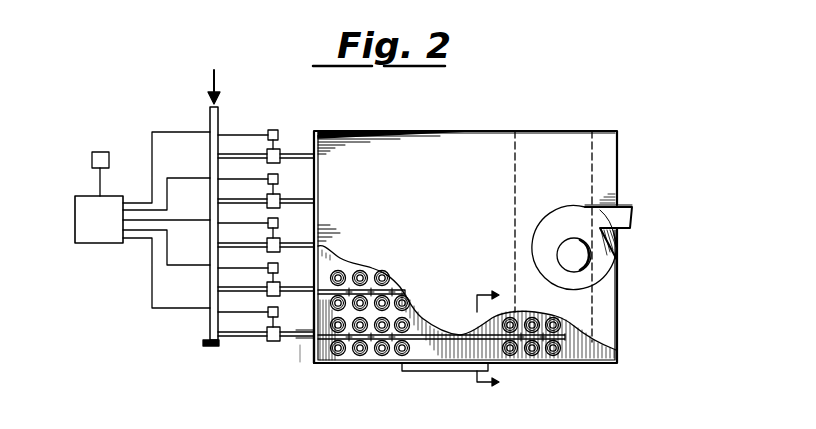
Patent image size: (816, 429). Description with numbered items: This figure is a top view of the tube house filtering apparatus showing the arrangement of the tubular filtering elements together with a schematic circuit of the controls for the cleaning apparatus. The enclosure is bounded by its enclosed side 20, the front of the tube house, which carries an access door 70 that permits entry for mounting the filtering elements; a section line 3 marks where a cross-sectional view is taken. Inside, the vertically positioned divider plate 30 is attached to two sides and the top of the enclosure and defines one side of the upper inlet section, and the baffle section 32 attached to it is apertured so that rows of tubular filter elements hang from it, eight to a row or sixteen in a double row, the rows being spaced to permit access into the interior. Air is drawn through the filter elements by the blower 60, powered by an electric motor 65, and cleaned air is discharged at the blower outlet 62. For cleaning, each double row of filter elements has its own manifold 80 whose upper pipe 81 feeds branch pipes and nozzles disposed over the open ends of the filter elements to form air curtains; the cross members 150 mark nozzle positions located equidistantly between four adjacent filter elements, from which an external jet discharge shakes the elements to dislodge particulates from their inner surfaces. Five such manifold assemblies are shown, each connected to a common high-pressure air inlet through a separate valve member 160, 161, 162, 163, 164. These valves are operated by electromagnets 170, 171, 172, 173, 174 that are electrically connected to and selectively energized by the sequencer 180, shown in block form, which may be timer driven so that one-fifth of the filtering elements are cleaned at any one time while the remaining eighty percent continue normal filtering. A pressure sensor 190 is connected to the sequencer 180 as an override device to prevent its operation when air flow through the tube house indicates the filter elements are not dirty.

The section line 3- 3 is at (494, 340).
The enclosed side 20 is at (520, 365).
The divider plate 30 is at (542, 158).
The baffle section 32 is at (324, 366).
The blower 60 is at (596, 280).
The blower outlet 62 is at (632, 211).
The electric motor 65 is at (589, 248).
The access door 70 is at (452, 372).
The manifold 80 is at (303, 365).
The upper pipe 81 is at (305, 341).
The cross members 150 is at (370, 264).
The valve member 160 is at (268, 341).
The valve member 161 is at (268, 294).
The valve member 162 is at (268, 250).
The valve member 163 is at (268, 206).
The valve member 164 is at (268, 161).
The electromagnet 170 is at (220, 117).
The electromagnet 171 is at (278, 267).
The electromagnet 172 is at (278, 222).
The electromagnet 173 is at (278, 178).
The electromagnet 174 is at (273, 130).
The sequencer 180 is at (76, 196).
The pressure sensor 190 is at (94, 150).